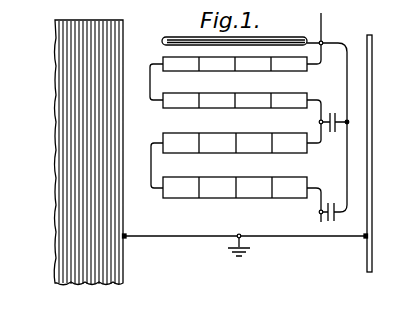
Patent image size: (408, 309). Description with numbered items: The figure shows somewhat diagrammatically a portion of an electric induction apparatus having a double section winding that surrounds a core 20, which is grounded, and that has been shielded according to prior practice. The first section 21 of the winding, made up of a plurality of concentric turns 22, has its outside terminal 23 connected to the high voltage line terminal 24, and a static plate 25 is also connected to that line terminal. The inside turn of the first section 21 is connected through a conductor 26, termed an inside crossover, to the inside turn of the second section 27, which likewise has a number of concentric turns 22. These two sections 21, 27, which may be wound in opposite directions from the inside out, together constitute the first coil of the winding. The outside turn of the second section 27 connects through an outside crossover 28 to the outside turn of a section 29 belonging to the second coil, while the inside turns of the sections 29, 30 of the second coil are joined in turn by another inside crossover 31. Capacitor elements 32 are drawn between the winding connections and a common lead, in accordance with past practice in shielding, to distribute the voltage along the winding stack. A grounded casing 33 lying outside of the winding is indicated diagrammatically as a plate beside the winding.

The core 20 is at (56, 36).
The first section 21 is at (167, 62).
The concentric turns 22 is at (263, 67).
The outside terminal 23 is at (311, 65).
The high voltage line terminal 24 is at (321, 32).
The static plate 25 is at (178, 37).
The inside crossover 26 is at (150, 81).
The second section 27 is at (176, 108).
The outside crossover 28 is at (320, 146).
The section of the second coil 29 is at (262, 134).
The section of the second coil 30 is at (235, 178).
The inside crossover 31 is at (151, 169).
The capacitor elements 32 is at (333, 132).
The grounded casing 33 is at (373, 106).